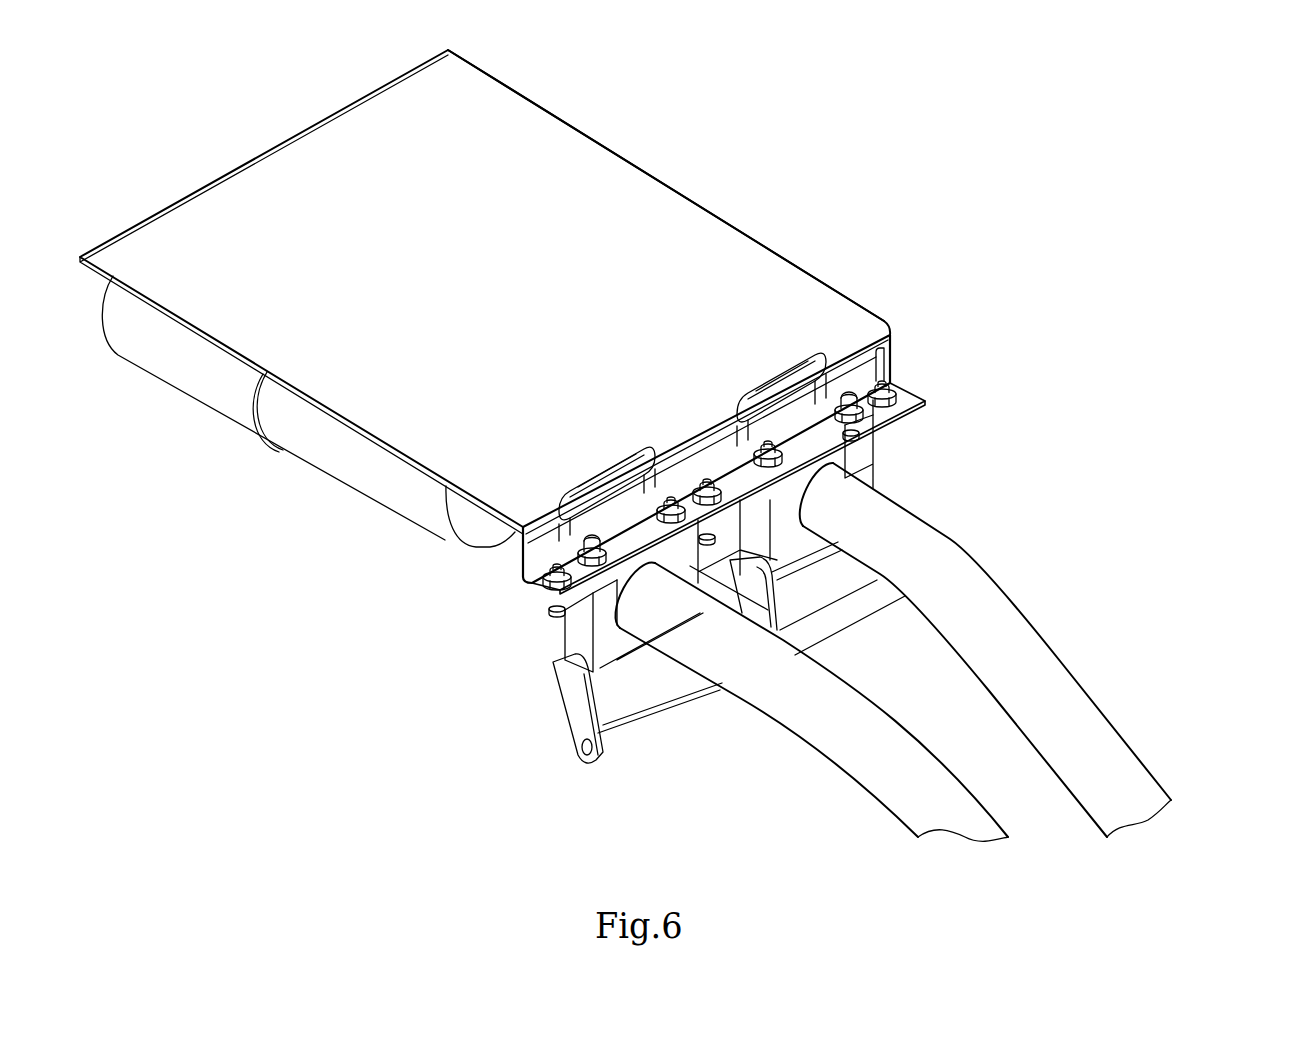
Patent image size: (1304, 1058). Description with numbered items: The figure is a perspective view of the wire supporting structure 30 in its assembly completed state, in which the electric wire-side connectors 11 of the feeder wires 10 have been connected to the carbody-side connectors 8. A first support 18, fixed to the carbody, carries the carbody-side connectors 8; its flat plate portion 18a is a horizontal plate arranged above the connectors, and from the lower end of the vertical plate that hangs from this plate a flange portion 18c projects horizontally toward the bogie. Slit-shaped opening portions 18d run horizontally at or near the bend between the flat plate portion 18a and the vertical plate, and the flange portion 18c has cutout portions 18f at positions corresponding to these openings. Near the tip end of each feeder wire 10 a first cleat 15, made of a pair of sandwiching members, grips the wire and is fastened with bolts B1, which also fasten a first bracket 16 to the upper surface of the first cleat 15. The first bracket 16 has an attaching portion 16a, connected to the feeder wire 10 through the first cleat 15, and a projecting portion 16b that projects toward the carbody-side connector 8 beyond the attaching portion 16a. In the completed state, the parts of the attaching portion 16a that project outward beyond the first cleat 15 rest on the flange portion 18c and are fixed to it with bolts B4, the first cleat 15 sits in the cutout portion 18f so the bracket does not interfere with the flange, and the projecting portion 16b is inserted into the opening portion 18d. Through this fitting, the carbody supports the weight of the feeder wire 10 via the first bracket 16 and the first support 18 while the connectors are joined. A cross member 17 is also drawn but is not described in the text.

The carbody-side connector 8 is at (143, 353).
The feeder wire 10 is at (892, 790).
The electric wire-side connector 11 is at (330, 460).
The first cleat 15 is at (877, 480).
The first bracket 16 is at (862, 470).
The attaching portion 16a is at (870, 420).
The projecting portion 16b is at (760, 388).
The cross bracket 17 is at (657, 720).
The first support 18 is at (683, 176).
The flat plate portion 18a is at (720, 247).
The flange portion 18c is at (925, 405).
The opening portion 18d is at (793, 375).
The cutout portion 18f is at (858, 440).
The wire supporting structure 30 is at (915, 185).
The bolt B1 is at (850, 395).
The bolt B4 is at (890, 385).